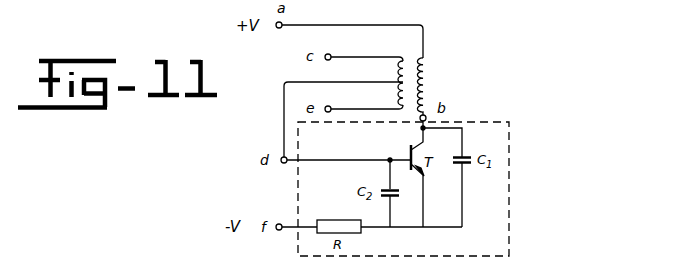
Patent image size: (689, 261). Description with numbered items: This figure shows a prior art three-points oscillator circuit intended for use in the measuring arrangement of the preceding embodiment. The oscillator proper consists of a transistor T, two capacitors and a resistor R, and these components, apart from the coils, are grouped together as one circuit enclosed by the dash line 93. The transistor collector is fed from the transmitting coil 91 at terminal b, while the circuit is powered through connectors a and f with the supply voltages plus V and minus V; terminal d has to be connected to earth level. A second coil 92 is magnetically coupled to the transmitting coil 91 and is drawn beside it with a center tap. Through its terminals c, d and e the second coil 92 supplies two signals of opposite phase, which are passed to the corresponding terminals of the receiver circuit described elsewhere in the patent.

The transmitting coil 91 is at (425, 82).
The second coil 92 is at (401, 68).
The dash line 93 is at (510, 185).